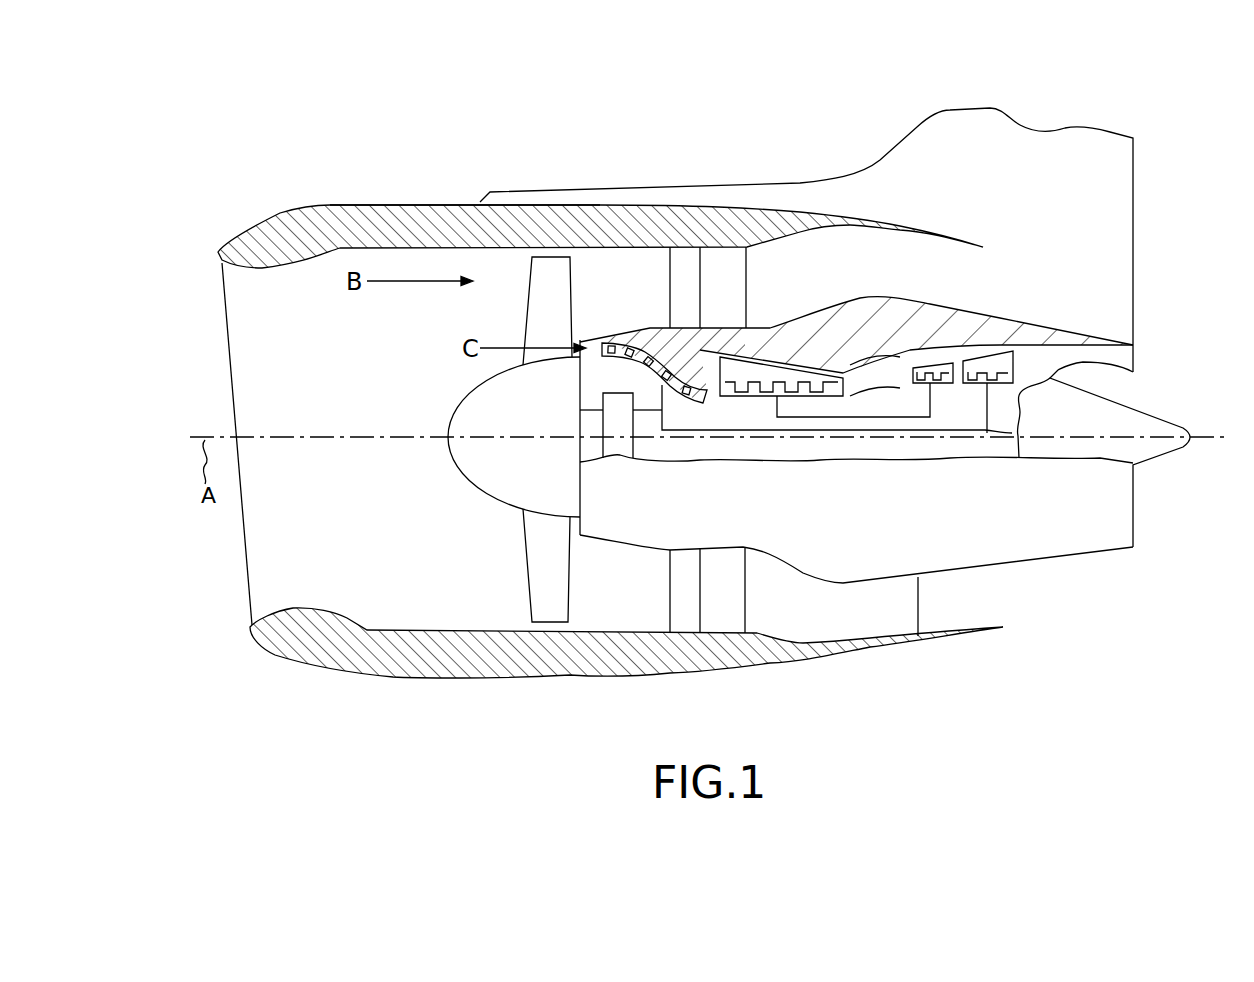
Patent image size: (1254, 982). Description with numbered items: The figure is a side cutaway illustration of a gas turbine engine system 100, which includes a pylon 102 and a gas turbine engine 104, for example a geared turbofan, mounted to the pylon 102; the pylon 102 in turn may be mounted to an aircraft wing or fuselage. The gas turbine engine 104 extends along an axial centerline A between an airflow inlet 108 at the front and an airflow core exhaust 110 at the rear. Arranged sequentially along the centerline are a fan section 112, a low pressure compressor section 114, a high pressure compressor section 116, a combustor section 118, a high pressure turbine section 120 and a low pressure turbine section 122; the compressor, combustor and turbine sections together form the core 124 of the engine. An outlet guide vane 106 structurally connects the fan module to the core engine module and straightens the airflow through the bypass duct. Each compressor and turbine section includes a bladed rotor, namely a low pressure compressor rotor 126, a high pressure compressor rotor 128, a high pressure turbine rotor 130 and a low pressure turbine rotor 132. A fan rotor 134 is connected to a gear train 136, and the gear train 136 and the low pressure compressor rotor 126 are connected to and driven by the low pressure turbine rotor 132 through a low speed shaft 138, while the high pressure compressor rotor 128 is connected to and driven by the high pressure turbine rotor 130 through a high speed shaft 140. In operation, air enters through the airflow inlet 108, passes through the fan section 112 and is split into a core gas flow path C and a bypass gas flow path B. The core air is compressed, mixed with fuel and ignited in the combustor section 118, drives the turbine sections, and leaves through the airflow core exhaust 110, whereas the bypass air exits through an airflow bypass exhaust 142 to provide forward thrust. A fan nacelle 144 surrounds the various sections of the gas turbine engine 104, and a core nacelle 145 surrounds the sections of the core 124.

The gas turbine engine system 100 is at (188, 163).
The pylon 102 is at (1023, 143).
The gas turbine engine 104 is at (331, 200).
The outlet guide vane 106 is at (743, 269).
The airflow inlet 108 is at (245, 545).
The airflow core exhaust 110 is at (1140, 349).
The fan section 112 is at (535, 693).
The low pressure compressor section 114 is at (708, 473).
The high pressure compressor section 116 is at (817, 473).
The combustor section 118 is at (882, 473).
The high pressure turbine section 120 is at (950, 473).
The low pressure turbine section 122 is at (1020, 473).
The core 124 is at (990, 520).
The low pressure compressor rotor 126 is at (643, 358).
The high pressure compressor rotor 128 is at (743, 366).
The high pressure turbine rotor 130 is at (923, 372).
The low pressure turbine rotor 132 is at (973, 375).
The fan rotor 134 is at (514, 504).
The gear train 136 is at (610, 400).
The low speed shaft 138 is at (1012, 433).
The high speed shaft 140 is at (777, 416).
The airflow bypass exhaust 142 is at (1012, 254).
The fan nacelle 144 is at (377, 205).
The core nacelle 145 is at (835, 302).